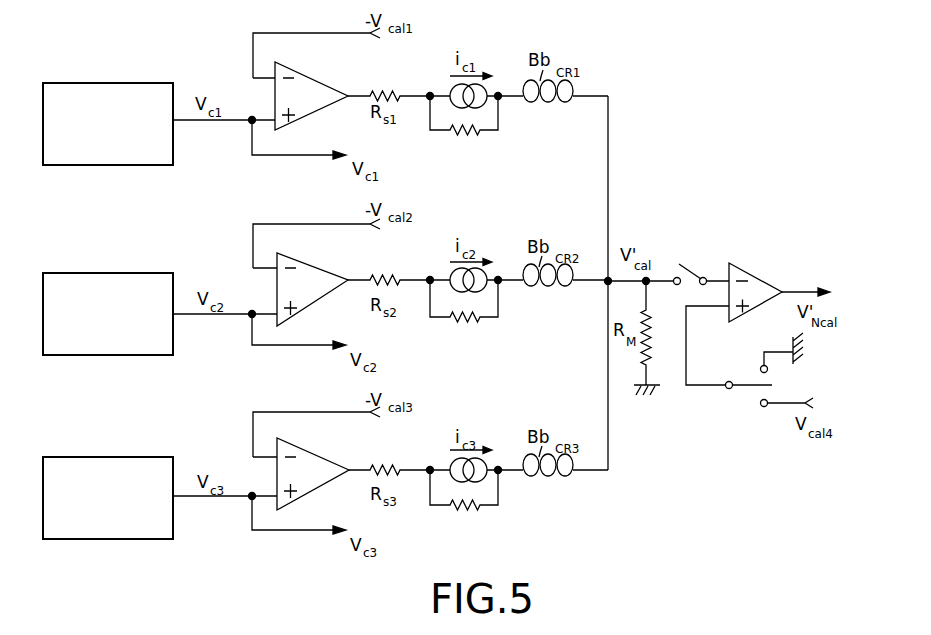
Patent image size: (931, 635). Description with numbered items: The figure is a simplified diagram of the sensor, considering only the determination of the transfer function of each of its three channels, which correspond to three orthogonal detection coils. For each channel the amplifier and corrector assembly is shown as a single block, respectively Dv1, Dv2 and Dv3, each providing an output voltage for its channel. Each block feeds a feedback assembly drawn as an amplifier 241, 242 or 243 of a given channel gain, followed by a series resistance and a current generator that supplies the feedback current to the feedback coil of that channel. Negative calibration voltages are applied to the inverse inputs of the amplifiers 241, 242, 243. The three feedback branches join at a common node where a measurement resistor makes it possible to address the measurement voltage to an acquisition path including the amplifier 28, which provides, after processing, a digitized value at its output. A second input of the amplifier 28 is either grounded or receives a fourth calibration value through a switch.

The amplifier/corrector block of first channel Dv1 is at (101, 83).
The amplifier/corrector block of second channel Dv2 is at (110, 273).
The amplifier/corrector block of third channel Dv3 is at (116, 457).
The amplifier 241 is at (302, 121).
The amplifier 242 is at (303, 312).
The amplifier 243 is at (300, 498).
The amplifier 28 is at (757, 312).